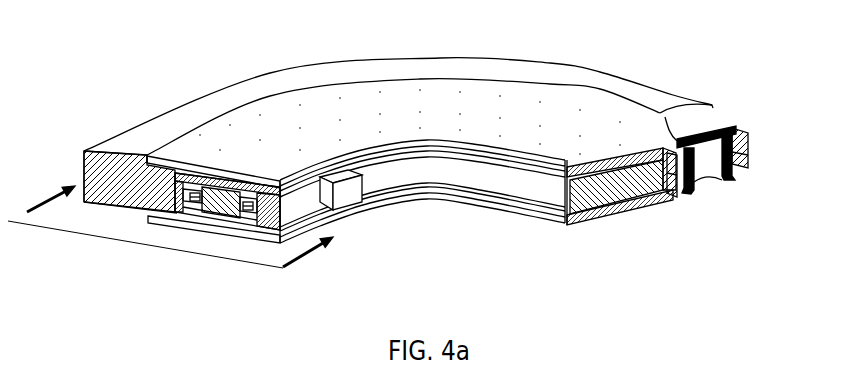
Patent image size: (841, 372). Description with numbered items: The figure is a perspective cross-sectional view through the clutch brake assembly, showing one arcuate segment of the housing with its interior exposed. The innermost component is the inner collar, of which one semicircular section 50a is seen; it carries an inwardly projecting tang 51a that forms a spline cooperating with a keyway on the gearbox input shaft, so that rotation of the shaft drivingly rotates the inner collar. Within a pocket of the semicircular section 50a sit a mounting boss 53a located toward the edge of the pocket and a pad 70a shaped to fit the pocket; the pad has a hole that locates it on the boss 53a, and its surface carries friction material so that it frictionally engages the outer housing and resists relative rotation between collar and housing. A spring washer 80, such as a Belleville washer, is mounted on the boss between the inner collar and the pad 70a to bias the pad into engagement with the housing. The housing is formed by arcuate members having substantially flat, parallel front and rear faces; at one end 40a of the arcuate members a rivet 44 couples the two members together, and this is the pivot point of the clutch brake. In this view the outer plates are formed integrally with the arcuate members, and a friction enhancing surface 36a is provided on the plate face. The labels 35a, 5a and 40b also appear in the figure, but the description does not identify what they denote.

The end of arcuate member 40a is at (83, 163).
The damping layer 35a is at (380, 98).
The rivet 44 is at (700, 130).
The ring segment 5a is at (170, 230).
The pad 70a is at (173, 192).
The mounting boss 53a is at (230, 240).
The spring washer 80 is at (248, 215).
The inwardly projecting tang 51a is at (347, 193).
The semicircular section 50a is at (463, 170).
The friction enhancing surface 36a is at (608, 223).
The second end of outer ring housing 40b is at (753, 163).